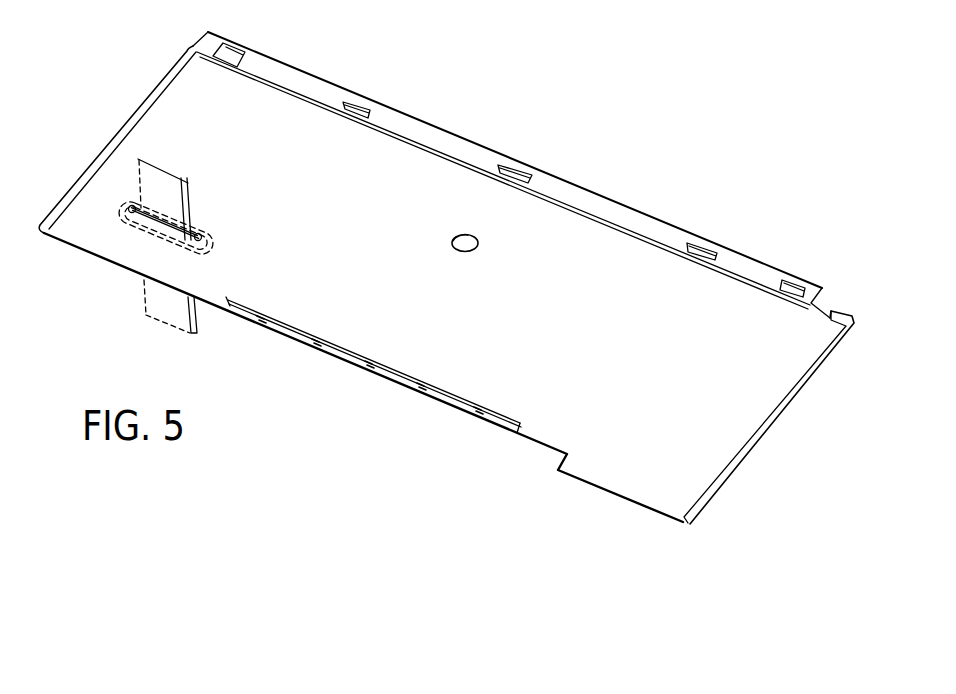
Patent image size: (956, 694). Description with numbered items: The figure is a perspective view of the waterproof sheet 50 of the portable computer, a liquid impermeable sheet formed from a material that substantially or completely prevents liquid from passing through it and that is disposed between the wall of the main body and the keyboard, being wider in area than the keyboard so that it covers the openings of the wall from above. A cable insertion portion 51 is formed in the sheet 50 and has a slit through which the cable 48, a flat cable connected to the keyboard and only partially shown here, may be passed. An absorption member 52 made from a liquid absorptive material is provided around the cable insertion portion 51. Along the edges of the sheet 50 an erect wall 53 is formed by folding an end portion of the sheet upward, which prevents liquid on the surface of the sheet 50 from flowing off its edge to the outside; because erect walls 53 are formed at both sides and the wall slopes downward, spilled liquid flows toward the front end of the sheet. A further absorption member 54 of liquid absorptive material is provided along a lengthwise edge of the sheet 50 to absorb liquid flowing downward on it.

The cable 48 is at (189, 189).
The sheet 50 is at (597, 277).
The cable insertion portion 51 is at (152, 222).
The absorption member 52 is at (214, 229).
The erect wall 53 is at (100, 148).
The absorption member 54 is at (398, 380).